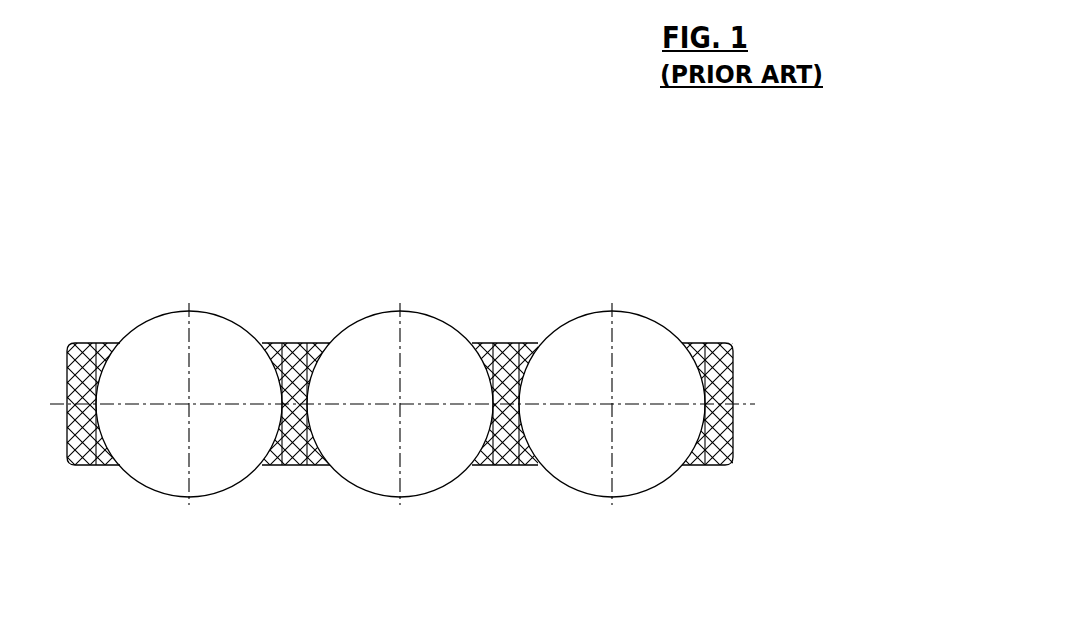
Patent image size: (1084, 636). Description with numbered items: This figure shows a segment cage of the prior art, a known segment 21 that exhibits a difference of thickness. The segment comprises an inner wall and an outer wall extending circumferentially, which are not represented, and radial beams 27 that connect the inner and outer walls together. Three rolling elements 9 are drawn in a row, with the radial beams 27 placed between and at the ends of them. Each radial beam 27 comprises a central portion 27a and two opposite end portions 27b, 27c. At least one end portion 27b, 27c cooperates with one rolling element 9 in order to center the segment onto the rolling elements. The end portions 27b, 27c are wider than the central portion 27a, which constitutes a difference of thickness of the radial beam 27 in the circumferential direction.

The rolling element 9 is at (221, 343).
The ball train with spacers 21 is at (65, 345).
The radial beam 27 is at (65, 462).
The central portion 27a is at (513, 410).
The end portion 27b is at (485, 467).
The end portion 27c is at (500, 344).